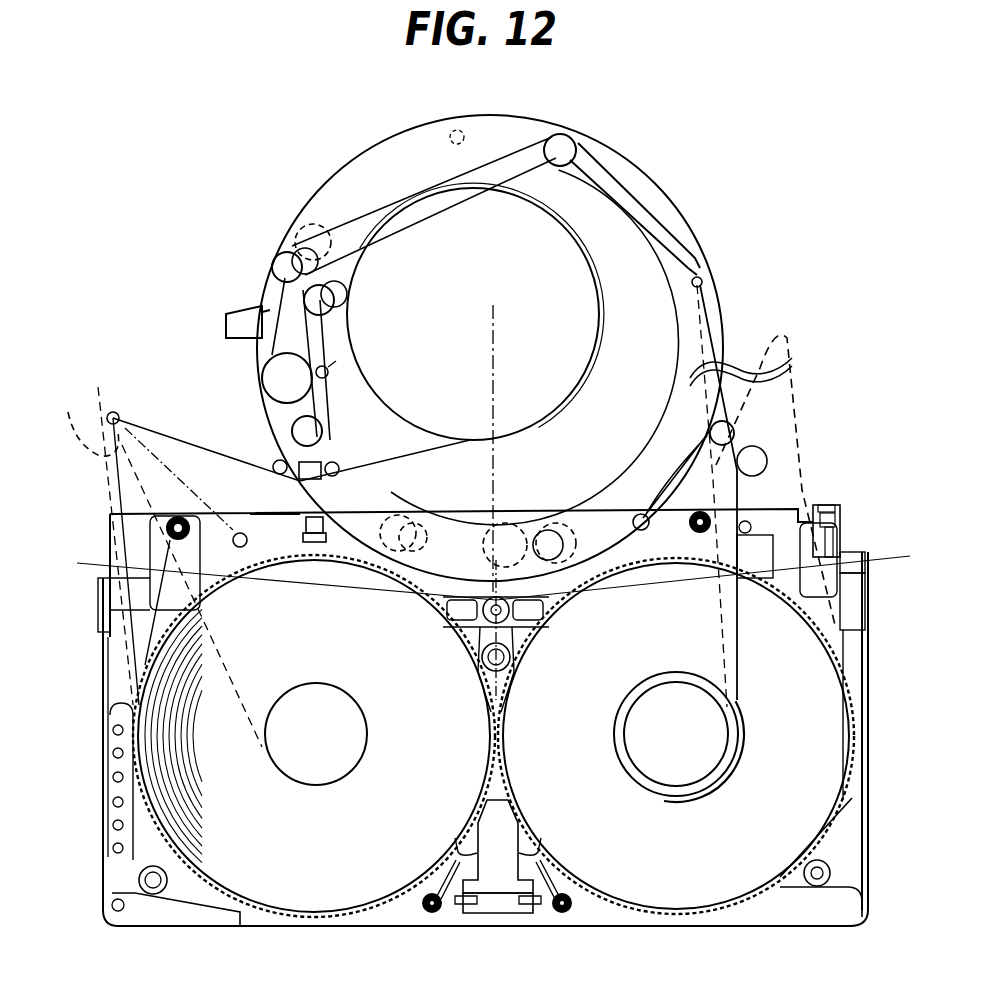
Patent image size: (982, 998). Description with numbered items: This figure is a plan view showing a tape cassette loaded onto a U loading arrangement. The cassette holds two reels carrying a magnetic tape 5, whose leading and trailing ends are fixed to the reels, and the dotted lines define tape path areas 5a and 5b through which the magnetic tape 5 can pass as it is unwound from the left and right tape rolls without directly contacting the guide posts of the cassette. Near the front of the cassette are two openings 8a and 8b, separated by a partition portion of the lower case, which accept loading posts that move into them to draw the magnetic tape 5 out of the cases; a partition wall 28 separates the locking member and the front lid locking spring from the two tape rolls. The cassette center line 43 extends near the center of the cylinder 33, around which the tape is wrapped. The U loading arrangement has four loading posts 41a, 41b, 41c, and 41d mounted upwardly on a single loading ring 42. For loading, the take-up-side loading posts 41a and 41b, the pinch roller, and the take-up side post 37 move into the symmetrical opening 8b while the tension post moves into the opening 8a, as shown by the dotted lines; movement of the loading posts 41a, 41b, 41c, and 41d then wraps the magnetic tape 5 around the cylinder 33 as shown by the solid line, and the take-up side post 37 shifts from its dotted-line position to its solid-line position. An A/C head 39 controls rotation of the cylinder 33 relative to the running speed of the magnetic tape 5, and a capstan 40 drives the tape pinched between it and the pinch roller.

The magnetic tape 5 is at (658, 223).
The tape path area 5a is at (79, 427).
The tape path area 5b is at (775, 473).
The opening 8a is at (277, 523).
The opening 8b is at (505, 525).
The partition wall 28 is at (114, 412).
The cylinder 33 is at (562, 382).
The take-up side post 37 is at (740, 433).
The A/C head 39 is at (222, 318).
The capstan 40 is at (268, 383).
The loading post 41a is at (570, 148).
The loading post 41b is at (275, 260).
The loading post 41c is at (300, 225).
The loading post 41d is at (440, 138).
The loading ring 42 is at (722, 320).
The center line 43 is at (491, 364).